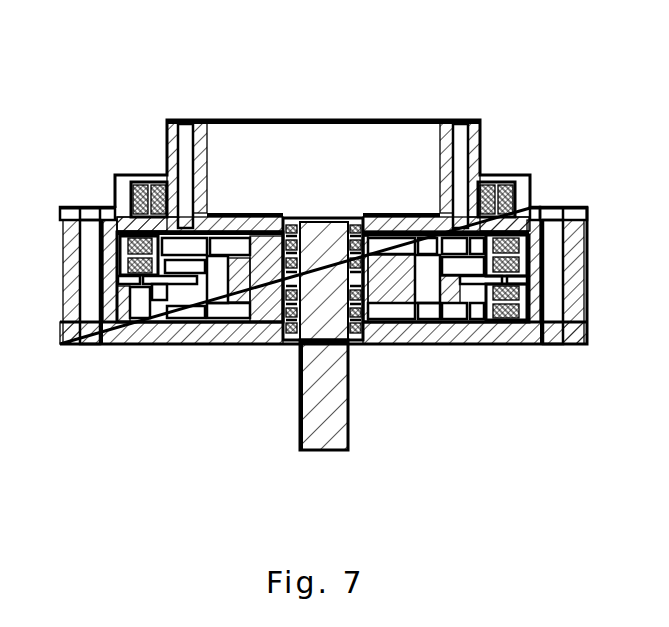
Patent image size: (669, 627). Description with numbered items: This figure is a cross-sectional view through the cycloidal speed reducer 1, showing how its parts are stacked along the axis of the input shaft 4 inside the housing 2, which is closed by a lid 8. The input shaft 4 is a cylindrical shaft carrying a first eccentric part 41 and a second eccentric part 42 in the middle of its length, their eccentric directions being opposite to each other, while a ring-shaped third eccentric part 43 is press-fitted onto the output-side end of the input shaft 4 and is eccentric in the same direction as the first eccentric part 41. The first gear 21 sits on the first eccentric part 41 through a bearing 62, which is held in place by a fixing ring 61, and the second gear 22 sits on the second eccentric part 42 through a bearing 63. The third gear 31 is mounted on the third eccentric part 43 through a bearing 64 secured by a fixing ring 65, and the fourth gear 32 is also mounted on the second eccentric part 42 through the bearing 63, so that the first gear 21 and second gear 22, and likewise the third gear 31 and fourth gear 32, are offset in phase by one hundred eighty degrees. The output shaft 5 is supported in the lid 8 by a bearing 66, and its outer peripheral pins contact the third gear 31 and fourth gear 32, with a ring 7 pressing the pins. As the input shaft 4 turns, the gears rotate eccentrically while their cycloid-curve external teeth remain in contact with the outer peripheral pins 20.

The cycloidal speed reducer 1 is at (322, 100).
The housing 2 is at (150, 346).
The input shaft 4 is at (328, 395).
The output shaft 5 is at (270, 214).
The ring 7 is at (545, 270).
The lid 8 is at (146, 176).
The outer peripheral pins 20 is at (132, 298).
The first gear 21 is at (573, 326).
The second gear 22 is at (572, 300).
The third gear 31 is at (590, 218).
The fourth gear 32 is at (530, 238).
The first eccentric part 41 is at (300, 360).
The second eccentric part 42 is at (373, 275).
The third eccentric part 43 is at (313, 218).
The fixing ring 61 is at (362, 332).
The bearing 62 is at (366, 320).
The bearing 63 is at (365, 300).
The bearing 64 is at (400, 219).
The fixing ring 65 is at (370, 216).
The bearing 66 is at (500, 180).